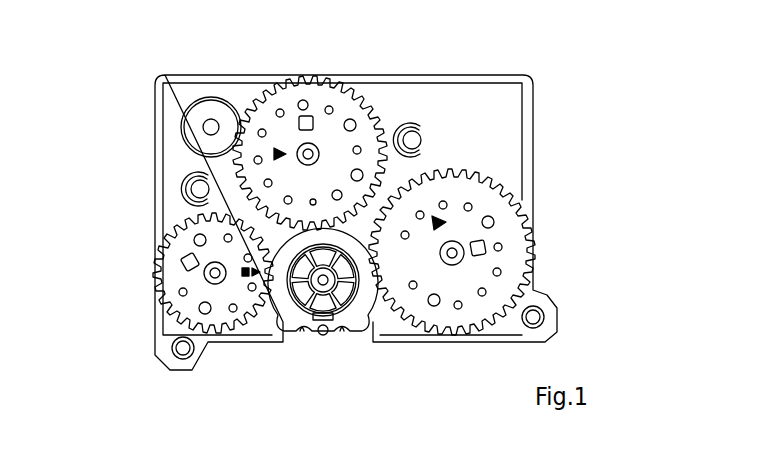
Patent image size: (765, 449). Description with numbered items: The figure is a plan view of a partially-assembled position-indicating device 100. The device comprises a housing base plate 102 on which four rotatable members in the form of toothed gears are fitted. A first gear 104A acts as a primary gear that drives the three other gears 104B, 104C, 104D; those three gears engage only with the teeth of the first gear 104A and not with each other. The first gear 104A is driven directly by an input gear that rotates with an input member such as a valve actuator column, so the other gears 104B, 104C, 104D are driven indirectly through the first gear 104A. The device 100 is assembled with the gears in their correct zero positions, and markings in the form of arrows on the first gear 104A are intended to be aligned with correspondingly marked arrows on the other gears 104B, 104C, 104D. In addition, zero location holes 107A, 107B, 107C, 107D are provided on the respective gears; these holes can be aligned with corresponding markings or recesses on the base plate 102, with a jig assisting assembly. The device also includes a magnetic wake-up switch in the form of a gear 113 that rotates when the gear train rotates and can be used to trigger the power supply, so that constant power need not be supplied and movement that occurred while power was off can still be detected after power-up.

The position-indicating device 100 is at (112, 148).
The housing base plate 102 is at (524, 115).
The gear (magnetic wake-up switch) 113 is at (198, 113).
The first gear 104A is at (358, 310).
The second gear 104B is at (157, 312).
The third gear 104C is at (252, 100).
The fourth gear 104D is at (513, 185).
The zero location hole 107A is at (344, 343).
The zero location hole 107B is at (198, 303).
The zero location hole 107C is at (360, 172).
The zero location hole 107D is at (437, 297).